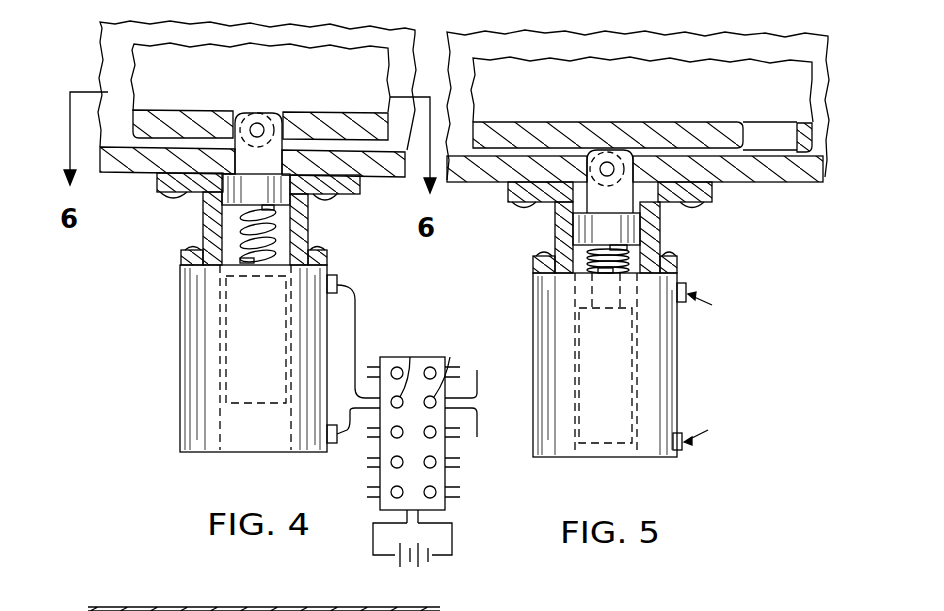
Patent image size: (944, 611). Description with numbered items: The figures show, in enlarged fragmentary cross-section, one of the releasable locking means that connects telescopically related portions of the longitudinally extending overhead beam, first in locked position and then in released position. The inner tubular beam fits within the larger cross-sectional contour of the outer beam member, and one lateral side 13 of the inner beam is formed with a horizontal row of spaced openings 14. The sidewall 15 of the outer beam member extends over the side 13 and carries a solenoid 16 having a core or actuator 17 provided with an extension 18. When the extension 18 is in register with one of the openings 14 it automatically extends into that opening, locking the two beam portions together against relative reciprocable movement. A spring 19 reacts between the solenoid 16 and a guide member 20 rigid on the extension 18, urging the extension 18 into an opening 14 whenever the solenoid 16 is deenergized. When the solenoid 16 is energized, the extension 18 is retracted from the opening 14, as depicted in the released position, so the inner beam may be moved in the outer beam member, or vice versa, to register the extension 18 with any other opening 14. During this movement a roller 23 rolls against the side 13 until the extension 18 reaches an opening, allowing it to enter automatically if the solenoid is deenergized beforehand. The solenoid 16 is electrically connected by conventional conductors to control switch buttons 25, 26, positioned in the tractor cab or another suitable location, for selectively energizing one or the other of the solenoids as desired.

In FIG. 4, the lateral side 13 is at (175, 115).
In FIG. 5, the lateral side 13 is at (685, 128).
In FIG. 4, the openings 14 is at (283, 124).
In FIG. 5, the openings 14 is at (750, 133).
In FIG. 4, the sidewall 15 is at (135, 163).
In FIG. 5, the sidewall 15 is at (491, 167).
In FIG. 4, the solenoid 16 is at (180, 365).
In FIG. 5, the solenoid 16 is at (677, 400).
In FIG. 4, the core or actuator 17 is at (227, 325).
In FIG. 5, the core or actuator 17 is at (625, 370).
In FIG. 4, the extension 18 is at (247, 160).
In FIG. 5, the extension 18 is at (595, 193).
In FIG. 4, the spring 19 is at (267, 247).
In FIG. 5, the spring 19 is at (627, 256).
In FIG. 4, the guide member 20 is at (248, 192).
In FIG. 5, the guide member 20 is at (598, 228).
In FIG. 4, the roller 23 is at (252, 110).
In FIG. 5, the roller 23 is at (603, 149).
In FIG. 4, the control switch button 25 is at (410, 357).
In FIG. 4, the control switch button 26 is at (450, 357).